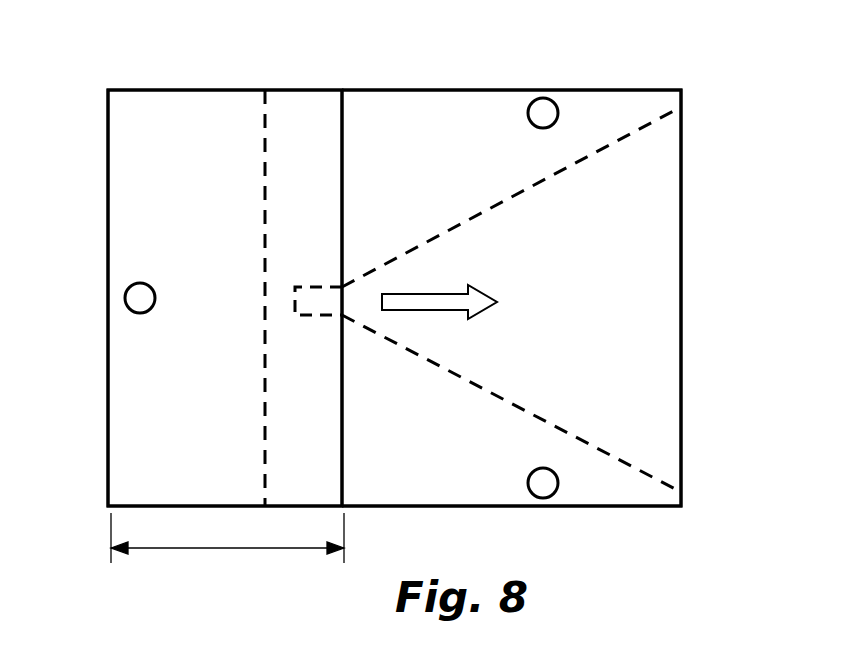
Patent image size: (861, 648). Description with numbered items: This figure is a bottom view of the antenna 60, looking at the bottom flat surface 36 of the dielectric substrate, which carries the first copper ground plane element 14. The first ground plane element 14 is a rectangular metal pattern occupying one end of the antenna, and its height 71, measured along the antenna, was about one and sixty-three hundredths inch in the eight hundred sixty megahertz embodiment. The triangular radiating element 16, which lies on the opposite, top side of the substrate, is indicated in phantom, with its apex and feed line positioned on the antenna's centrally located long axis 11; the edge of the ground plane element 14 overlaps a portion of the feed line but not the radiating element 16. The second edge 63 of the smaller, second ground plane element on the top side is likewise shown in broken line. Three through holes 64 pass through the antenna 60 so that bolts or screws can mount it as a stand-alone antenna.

The antenna 60 is at (82, 103).
The first metal ground plane element 14 is at (180, 130).
The second edge 63 is at (266, 383).
The bottom flat surface 36 is at (435, 460).
The radiating element 16 is at (645, 285).
The long axis 11 is at (445, 292).
The through holes 64 is at (125, 298).
The height of first ground plane element 71 is at (222, 548).